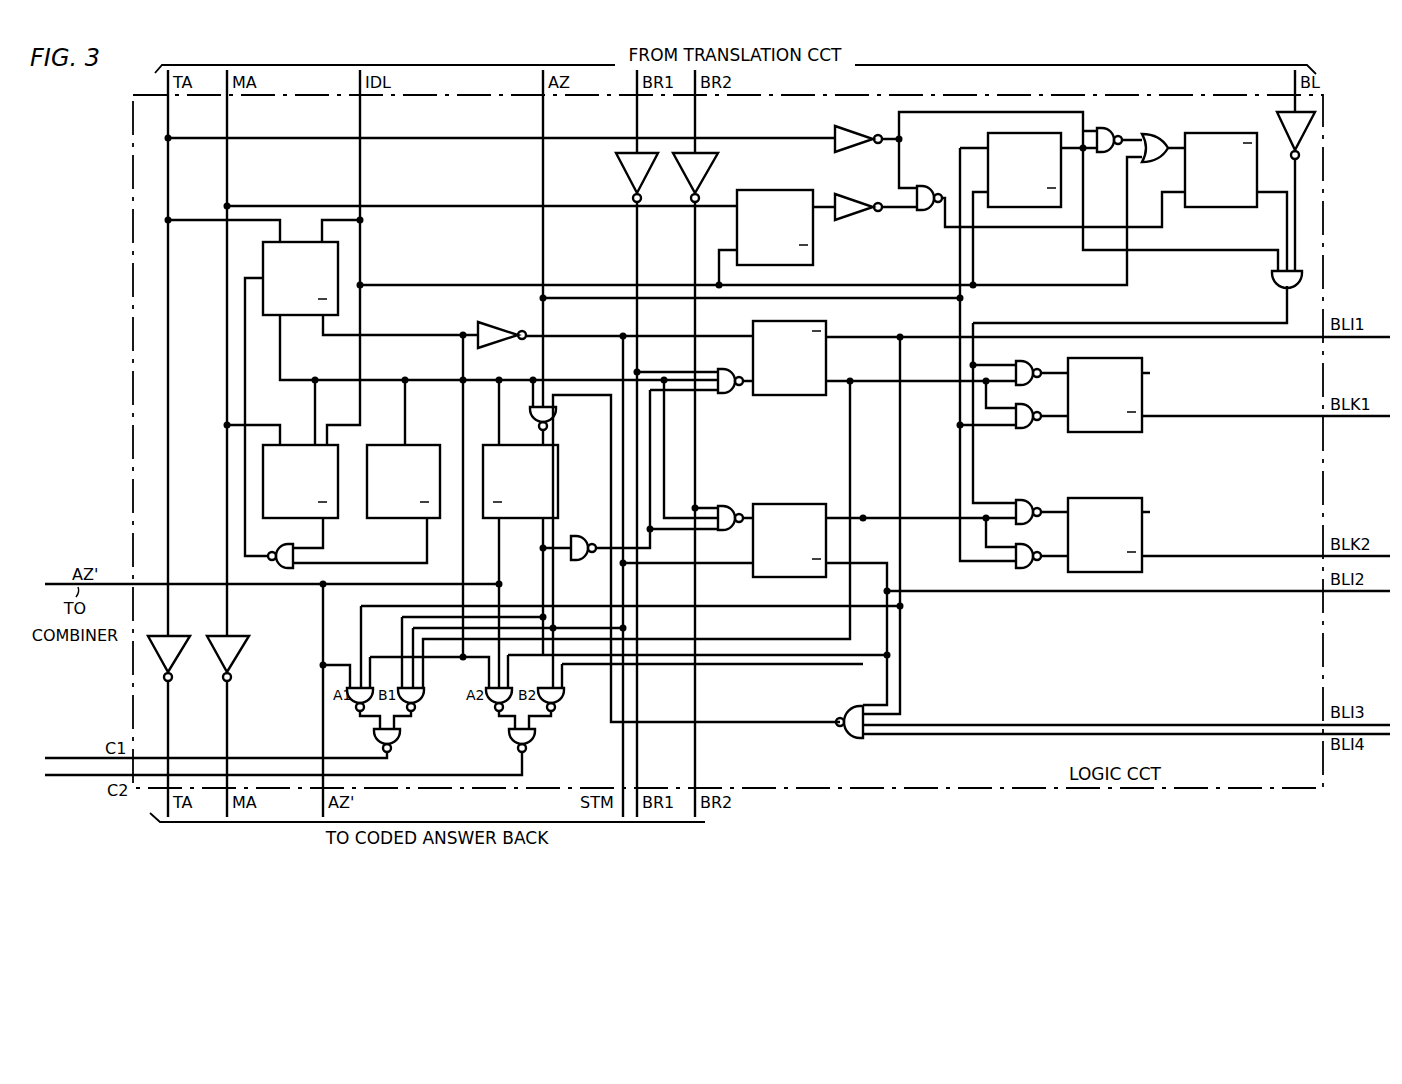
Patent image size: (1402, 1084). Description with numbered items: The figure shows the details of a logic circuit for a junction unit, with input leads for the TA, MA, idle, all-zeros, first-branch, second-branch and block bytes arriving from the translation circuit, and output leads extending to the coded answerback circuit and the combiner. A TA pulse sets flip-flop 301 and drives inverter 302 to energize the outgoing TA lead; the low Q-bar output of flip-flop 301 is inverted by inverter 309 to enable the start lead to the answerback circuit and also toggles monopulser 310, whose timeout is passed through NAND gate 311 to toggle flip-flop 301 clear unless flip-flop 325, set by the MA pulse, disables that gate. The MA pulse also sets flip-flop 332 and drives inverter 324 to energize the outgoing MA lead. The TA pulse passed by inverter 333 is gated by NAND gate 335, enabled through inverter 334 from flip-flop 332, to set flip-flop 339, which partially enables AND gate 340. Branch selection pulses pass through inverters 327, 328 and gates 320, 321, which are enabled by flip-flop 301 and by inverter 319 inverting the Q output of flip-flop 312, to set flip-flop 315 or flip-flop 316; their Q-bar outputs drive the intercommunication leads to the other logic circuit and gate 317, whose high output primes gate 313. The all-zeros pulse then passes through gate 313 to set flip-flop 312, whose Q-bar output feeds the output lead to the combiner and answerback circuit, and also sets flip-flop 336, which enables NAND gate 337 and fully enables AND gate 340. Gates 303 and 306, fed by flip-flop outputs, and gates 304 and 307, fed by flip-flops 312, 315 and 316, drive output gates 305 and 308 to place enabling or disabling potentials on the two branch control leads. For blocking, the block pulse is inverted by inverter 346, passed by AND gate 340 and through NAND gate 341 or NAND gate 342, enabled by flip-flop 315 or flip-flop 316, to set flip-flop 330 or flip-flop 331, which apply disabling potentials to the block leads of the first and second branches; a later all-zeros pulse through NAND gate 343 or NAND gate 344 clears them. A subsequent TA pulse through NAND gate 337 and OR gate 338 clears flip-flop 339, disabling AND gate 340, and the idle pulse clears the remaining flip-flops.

The flip-flop 301 is at (319, 240).
The inverter 302 is at (180, 636).
The NAND gate 303 is at (346, 712).
The gate 304 is at (420, 712).
The gate 305 is at (396, 745).
The NAND gate 306 is at (494, 712).
The gate 307 is at (562, 711).
The gate 308 is at (531, 745).
The inverter 309 is at (478, 328).
The monopulser 310 is at (414, 444).
The NAND gate 311 is at (277, 551).
The flip-flop 312 is at (560, 482).
The gate 313 is at (558, 414).
The flip-flop 315 is at (828, 330).
The flip-flop 316 is at (780, 504).
The gate 317 is at (844, 738).
The inverter 319 is at (574, 562).
The gate 320 is at (725, 393).
The gate 321 is at (719, 505).
The inverter 324 is at (238, 636).
The flip-flop 325 is at (336, 520).
The inverter 327 is at (616, 170).
The inverter 328 is at (703, 164).
The flip-flop 330 is at (1150, 381).
The flip-flop 331 is at (1150, 519).
The flip-flop 332 is at (813, 250).
The inverter 333 is at (834, 126).
The inverter 334 is at (850, 194).
The NAND gate 335 is at (918, 186).
The flip-flop 336 is at (992, 134).
The NAND gate 337 is at (1112, 132).
The OR gate 338 is at (1155, 160).
The flip-flop 339 is at (1222, 208).
The AND gate 340 is at (1271, 279).
The NAND gate 341 is at (1020, 362).
The NAND gate 342 is at (1032, 500).
The NAND gate 343 is at (1023, 429).
The NAND gate 344 is at (1026, 569).
The inverter 346 is at (1277, 116).